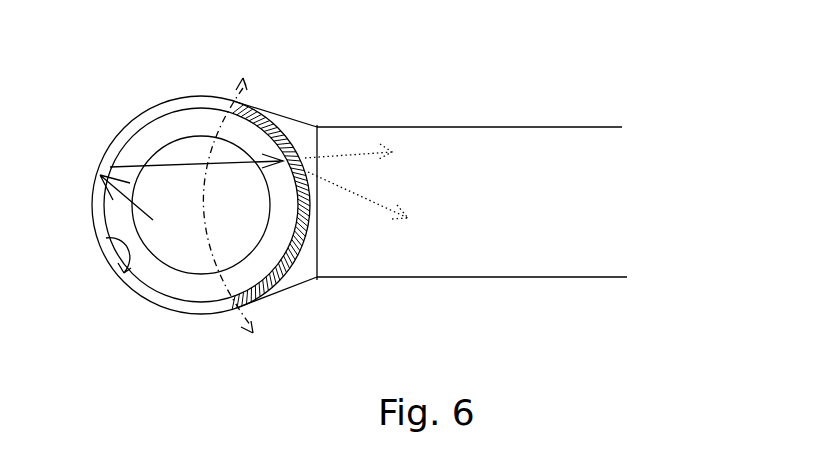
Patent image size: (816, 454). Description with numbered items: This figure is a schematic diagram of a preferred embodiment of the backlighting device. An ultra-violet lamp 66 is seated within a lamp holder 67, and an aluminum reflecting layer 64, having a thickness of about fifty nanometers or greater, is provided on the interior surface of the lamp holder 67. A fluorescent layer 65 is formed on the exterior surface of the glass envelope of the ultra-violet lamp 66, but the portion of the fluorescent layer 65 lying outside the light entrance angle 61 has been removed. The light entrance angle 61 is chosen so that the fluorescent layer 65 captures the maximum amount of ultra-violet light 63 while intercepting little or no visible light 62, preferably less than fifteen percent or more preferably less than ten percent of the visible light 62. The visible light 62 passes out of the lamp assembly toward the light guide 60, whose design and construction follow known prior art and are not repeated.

The light guide 60 is at (557, 221).
The light entrance angle 61 is at (247, 99).
The visible light 62 is at (378, 188).
The ultra-violet light 63 is at (135, 167).
The aluminum reflecting layer 64 is at (104, 239).
The fluorescent layer 65 is at (283, 138).
The ultra-violet lamp 66 is at (200, 288).
The lamp holder 67 is at (203, 98).